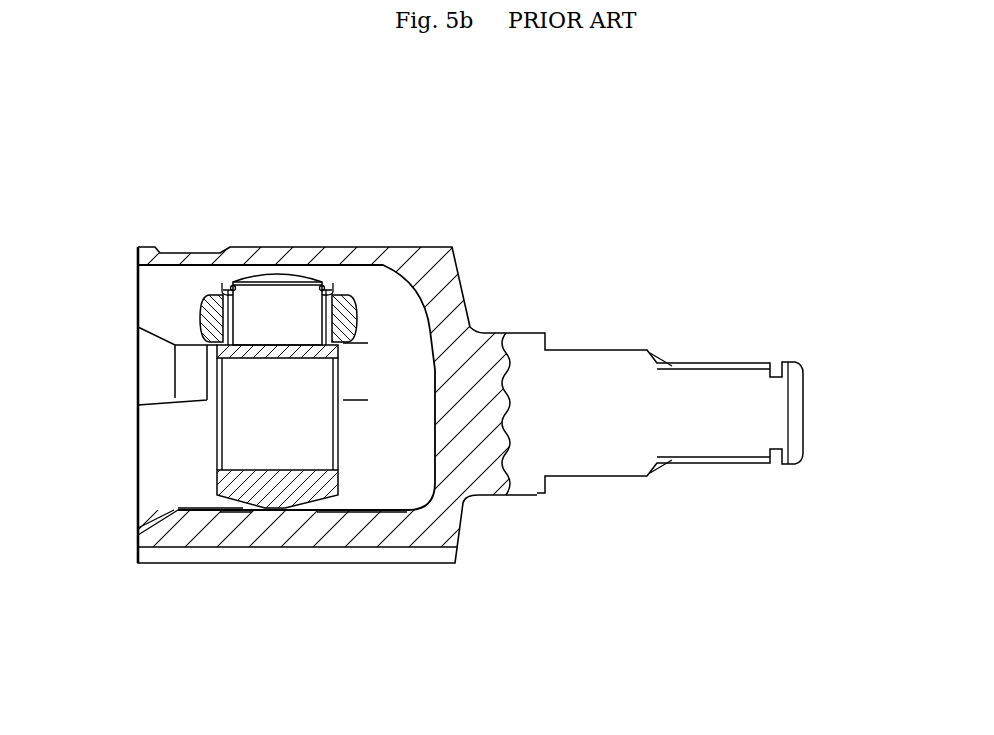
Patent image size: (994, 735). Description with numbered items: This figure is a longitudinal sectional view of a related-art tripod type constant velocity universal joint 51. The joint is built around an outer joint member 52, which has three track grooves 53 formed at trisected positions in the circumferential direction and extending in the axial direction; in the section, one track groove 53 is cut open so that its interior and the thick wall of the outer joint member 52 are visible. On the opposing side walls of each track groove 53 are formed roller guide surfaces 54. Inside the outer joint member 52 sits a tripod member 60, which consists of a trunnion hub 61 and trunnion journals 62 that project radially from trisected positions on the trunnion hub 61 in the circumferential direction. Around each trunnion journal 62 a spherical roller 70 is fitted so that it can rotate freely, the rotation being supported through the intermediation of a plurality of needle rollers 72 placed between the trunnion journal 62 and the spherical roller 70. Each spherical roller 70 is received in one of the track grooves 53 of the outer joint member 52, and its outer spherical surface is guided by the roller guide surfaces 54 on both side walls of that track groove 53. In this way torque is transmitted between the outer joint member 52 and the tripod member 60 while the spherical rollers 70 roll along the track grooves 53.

The tripod type constant velocity universal joint 51 is at (457, 219).
The outer joint member 52 is at (409, 250).
The track groove 53 is at (378, 285).
The roller guide surface 54 is at (163, 317).
The tripod member 60 is at (323, 483).
The trunnion hub 61 is at (276, 492).
The trunnion journal 62 is at (270, 275).
The spherical roller 70 is at (342, 300).
The needle roller 72 is at (205, 308).